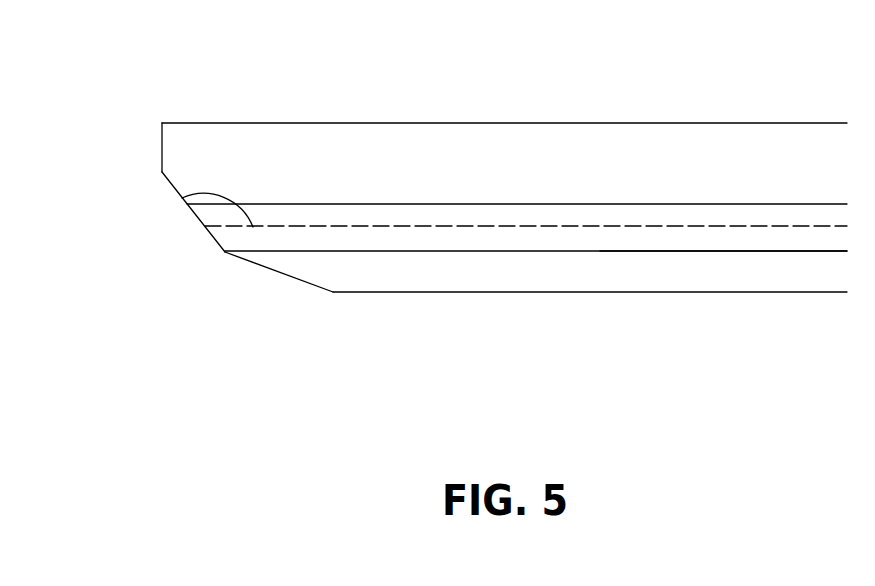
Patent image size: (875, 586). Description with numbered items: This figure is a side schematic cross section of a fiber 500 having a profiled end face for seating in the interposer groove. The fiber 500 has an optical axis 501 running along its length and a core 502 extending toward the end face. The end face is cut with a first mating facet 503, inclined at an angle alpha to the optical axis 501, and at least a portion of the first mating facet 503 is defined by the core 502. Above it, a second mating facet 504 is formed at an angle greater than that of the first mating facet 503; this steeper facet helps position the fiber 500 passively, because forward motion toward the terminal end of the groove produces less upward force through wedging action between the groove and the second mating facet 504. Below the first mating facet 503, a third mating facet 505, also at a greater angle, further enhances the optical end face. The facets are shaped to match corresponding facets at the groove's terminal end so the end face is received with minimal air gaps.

The fiber 500 is at (378, 122).
The optical axis 501 is at (693, 235).
The core 502 is at (622, 215).
The first mating facet 503 is at (195, 218).
The second mating facet 504 is at (162, 143).
The third mating facet 505 is at (281, 277).